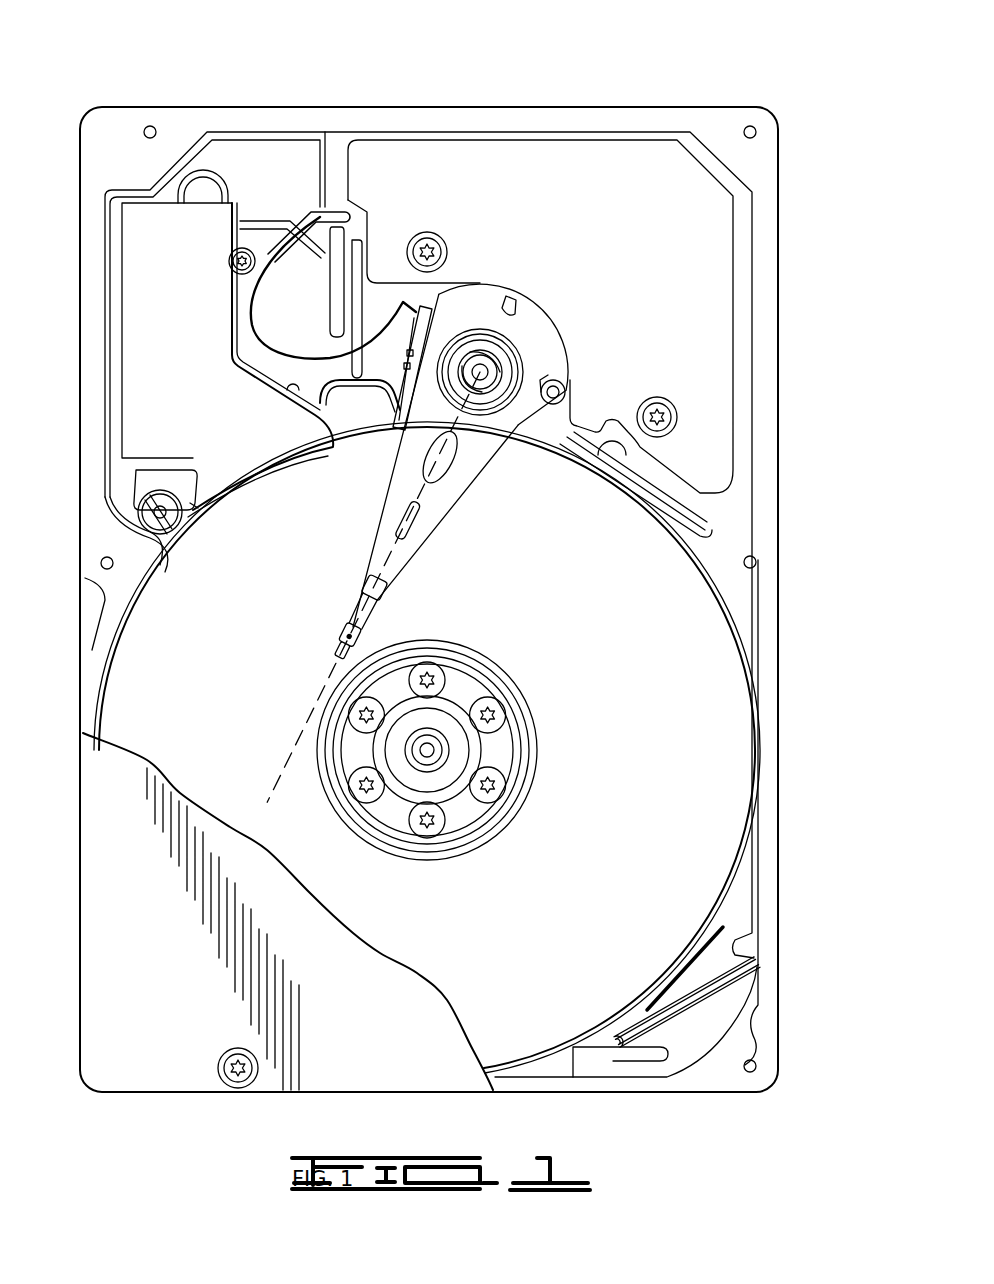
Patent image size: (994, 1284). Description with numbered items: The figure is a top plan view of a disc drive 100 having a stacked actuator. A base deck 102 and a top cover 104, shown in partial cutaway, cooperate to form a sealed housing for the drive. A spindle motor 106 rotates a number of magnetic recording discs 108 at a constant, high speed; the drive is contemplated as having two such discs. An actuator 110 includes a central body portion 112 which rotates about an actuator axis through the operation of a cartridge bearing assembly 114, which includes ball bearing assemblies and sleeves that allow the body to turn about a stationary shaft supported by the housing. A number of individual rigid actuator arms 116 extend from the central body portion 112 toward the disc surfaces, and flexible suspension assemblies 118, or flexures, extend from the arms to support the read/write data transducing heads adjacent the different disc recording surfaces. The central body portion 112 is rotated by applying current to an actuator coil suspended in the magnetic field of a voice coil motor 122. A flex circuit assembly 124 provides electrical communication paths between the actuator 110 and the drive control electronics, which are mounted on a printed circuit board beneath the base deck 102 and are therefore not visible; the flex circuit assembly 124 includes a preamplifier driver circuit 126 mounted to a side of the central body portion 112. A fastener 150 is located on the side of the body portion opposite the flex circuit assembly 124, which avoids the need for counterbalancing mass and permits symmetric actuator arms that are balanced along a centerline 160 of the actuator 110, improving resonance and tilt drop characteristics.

The disc drive 100 is at (148, 72).
The base deck 102 is at (260, 363).
The top cover 104 is at (108, 790).
The spindle motor 106 is at (447, 722).
The magnetic recording discs 108 is at (695, 740).
The actuator 110 is at (466, 506).
The central body portion 112 is at (488, 442).
The cartridge bearing assembly 114 is at (508, 342).
The rigid actuator arms 116 is at (405, 555).
The flexible suspension assemblies 118 is at (357, 615).
The voice coil motor 122 is at (605, 176).
The flex circuit assembly 124 is at (267, 332).
The preamplifier driver circuit 126 is at (432, 322).
The fastener 150 is at (567, 384).
The centerline 160 is at (293, 763).